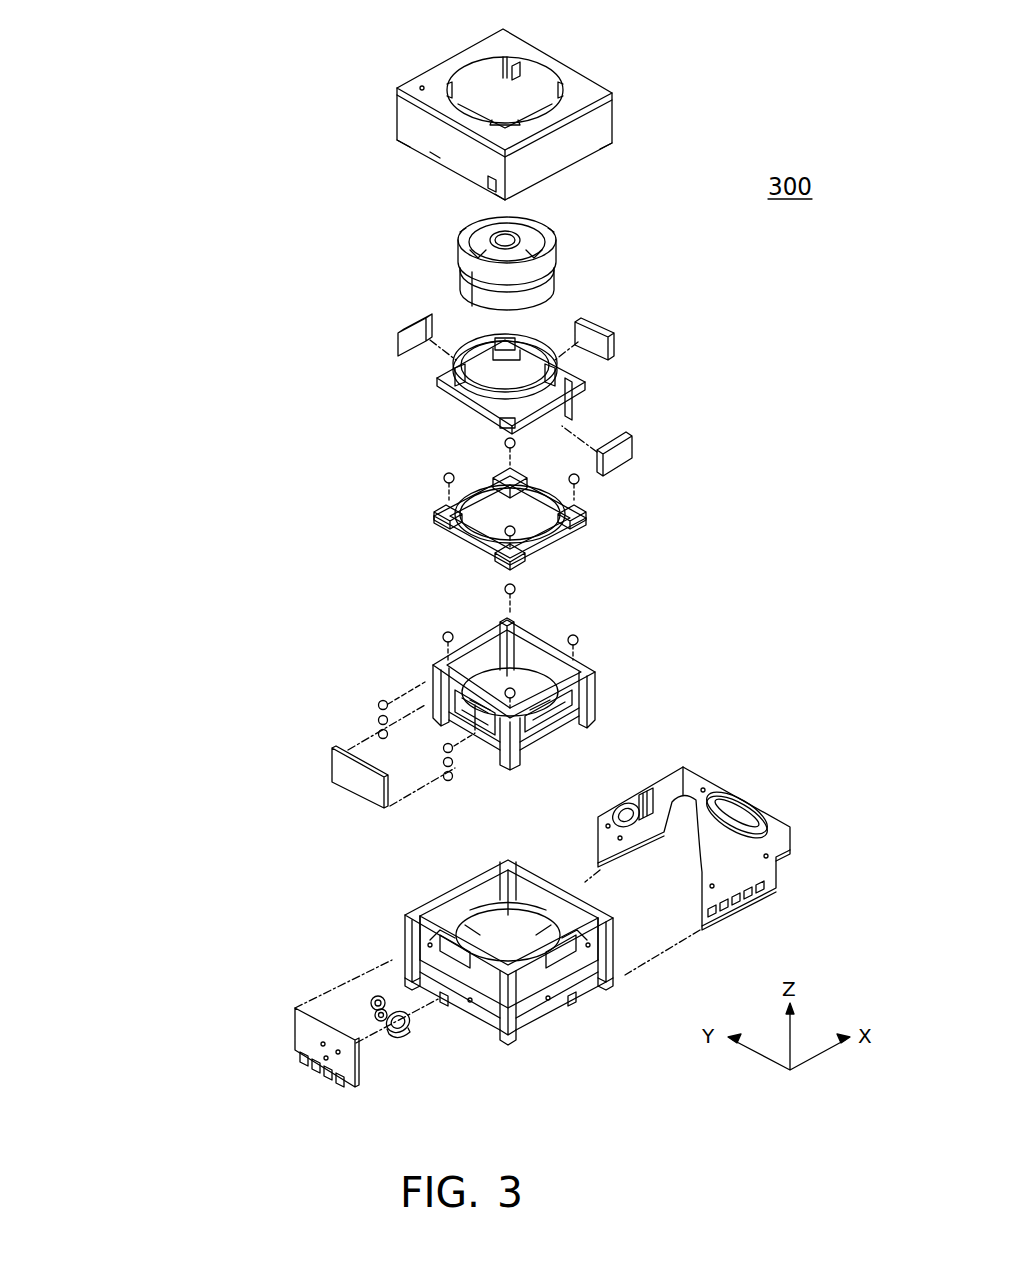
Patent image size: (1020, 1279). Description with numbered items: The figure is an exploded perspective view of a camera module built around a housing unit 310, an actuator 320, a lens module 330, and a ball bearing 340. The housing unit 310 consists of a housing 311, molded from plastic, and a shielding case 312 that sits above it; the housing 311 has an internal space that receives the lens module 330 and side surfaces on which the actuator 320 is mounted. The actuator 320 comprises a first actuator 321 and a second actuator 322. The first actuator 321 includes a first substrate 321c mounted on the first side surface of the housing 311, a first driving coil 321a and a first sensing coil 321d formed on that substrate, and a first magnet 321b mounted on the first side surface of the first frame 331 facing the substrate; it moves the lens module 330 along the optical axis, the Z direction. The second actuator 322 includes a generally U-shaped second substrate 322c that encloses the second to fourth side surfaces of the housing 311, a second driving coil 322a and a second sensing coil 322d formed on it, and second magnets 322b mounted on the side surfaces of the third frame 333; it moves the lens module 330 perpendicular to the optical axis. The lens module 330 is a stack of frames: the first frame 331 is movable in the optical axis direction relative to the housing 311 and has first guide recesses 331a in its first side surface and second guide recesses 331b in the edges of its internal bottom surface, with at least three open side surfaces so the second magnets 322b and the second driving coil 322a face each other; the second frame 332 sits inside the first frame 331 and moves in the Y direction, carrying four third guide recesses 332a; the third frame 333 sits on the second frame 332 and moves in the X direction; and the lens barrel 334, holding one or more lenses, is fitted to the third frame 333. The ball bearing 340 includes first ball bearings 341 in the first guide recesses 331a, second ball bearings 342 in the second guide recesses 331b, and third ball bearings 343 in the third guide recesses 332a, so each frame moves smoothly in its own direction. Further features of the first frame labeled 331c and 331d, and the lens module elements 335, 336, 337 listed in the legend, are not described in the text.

The housing unit 310 is at (118, 18).
The housing 311 is at (540, 1005).
The shielding case 312 is at (415, 116).
The actuator 320 is at (188, 168).
The first actuator 321 is at (118, 122).
The first driving coil 321a is at (458, 1078).
The first magnet 321b is at (356, 784).
The first substrate 321c is at (300, 1022).
The first sensing coil 321d is at (372, 1000).
The second actuator 322 is at (118, 263).
The second driving coil 322a is at (637, 790).
The second magnet 322b is at (657, 432).
The second substrate 322c is at (653, 950).
The second sensing coil 322d is at (630, 870).
The lens module 330 is at (118, 637).
The first frame 331 is at (678, 660).
The first guide recess 331a is at (504, 762).
The second guide recess 331b is at (532, 628).
The carrier window 331c is at (442, 730).
The carrier side rail 331d is at (443, 707).
The second frame 332 is at (655, 548).
The third guide recess 332a is at (590, 510).
The third frame 333 is at (460, 398).
The lens barrel 334 is at (462, 284).
The lens 335 is at (87, 563).
The lens 336 is at (87, 594).
The lens 337 is at (87, 626).
The ball bearing 340 is at (118, 668).
The first ball bearing 341 is at (378, 706).
The second ball bearing 342 is at (446, 630).
The third ball bearing 343 is at (445, 478).